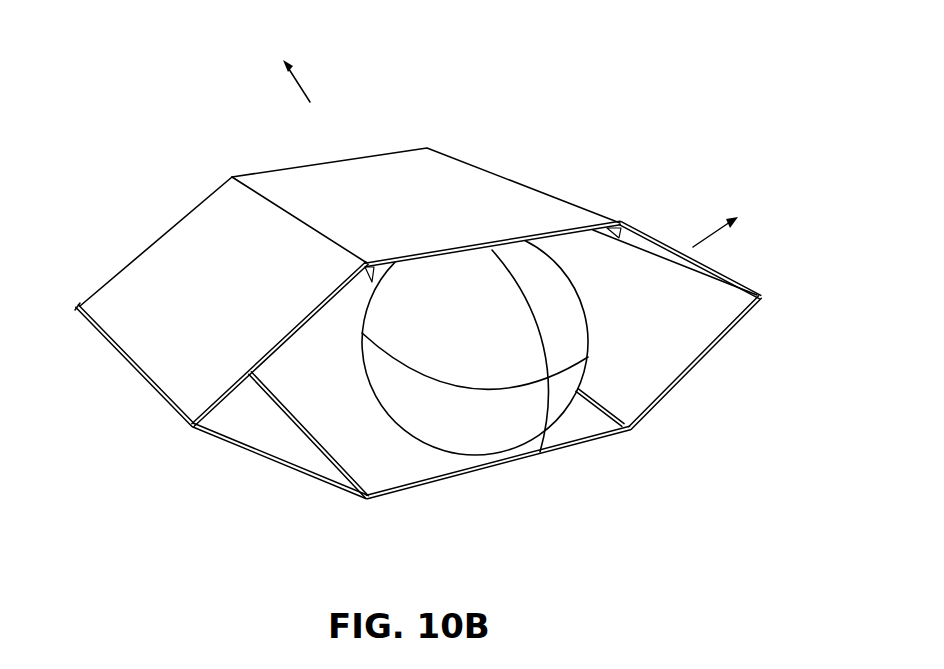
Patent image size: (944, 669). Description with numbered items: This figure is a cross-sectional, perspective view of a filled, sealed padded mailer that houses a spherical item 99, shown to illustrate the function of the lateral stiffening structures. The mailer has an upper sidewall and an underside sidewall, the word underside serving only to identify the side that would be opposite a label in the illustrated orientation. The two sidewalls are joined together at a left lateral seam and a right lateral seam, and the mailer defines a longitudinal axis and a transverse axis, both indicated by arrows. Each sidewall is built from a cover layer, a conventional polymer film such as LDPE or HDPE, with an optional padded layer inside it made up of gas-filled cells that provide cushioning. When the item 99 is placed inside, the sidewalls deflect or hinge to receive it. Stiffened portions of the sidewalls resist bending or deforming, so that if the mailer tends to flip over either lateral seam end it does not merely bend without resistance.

The spherical item 99 is at (533, 437).